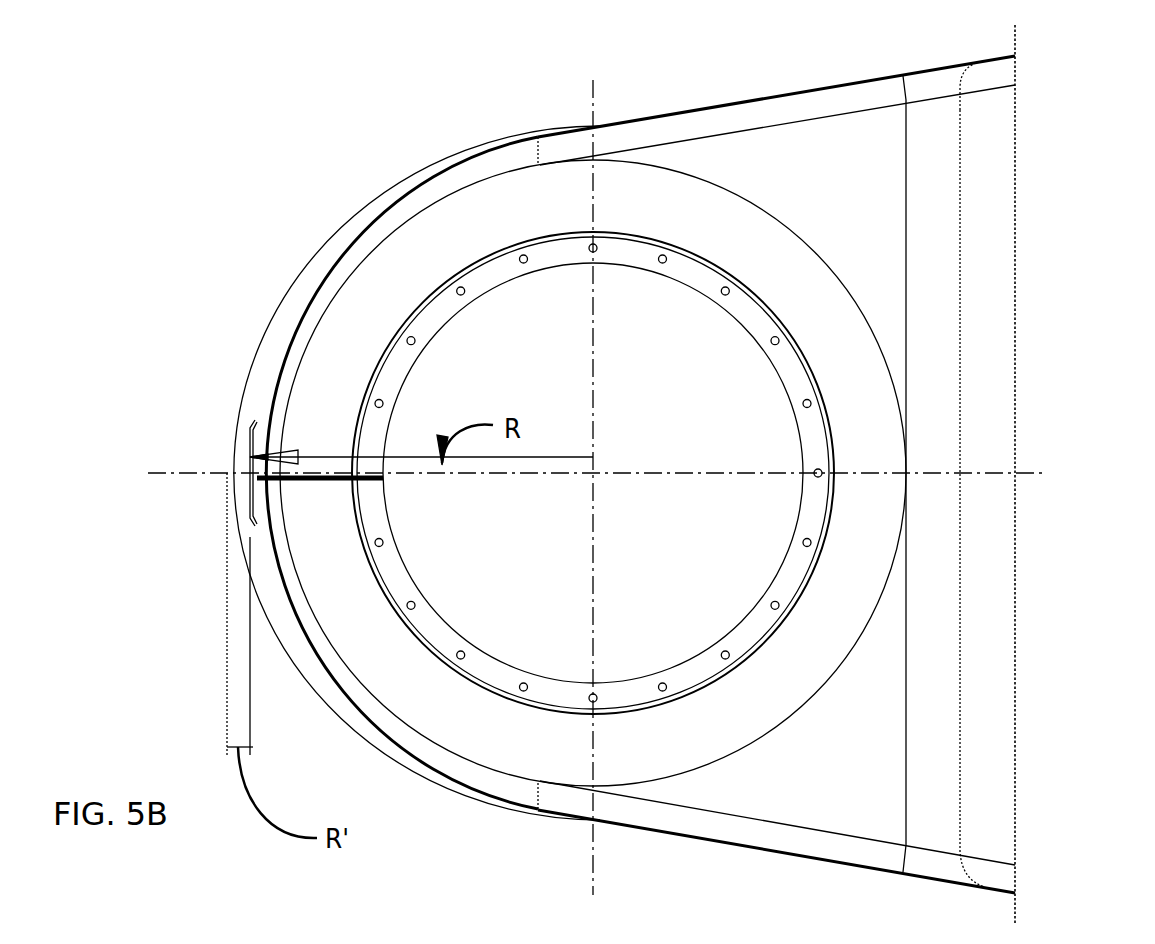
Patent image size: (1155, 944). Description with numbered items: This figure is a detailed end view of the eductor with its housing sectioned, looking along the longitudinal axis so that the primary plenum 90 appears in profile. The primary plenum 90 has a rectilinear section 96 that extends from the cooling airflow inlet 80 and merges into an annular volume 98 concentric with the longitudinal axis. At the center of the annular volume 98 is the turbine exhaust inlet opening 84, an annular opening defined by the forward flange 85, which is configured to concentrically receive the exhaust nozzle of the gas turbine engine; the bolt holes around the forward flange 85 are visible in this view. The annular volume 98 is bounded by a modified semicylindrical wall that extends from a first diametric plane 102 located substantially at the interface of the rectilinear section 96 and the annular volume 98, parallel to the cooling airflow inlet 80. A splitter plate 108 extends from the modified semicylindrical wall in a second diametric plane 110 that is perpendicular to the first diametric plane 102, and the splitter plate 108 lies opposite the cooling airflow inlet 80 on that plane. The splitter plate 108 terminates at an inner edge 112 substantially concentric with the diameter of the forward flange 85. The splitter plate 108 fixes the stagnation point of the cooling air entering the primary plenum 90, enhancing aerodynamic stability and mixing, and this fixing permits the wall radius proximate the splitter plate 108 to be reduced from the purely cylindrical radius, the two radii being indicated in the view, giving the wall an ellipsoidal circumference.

The cooling airflow inlet 80 is at (1016, 277).
The turbine exhaust inlet opening 84 is at (515, 365).
The forward flange 85 is at (738, 322).
The primary plenum 90 is at (675, 210).
The rectilinear section 96 is at (867, 178).
The annular volume 98 is at (470, 228).
The first diametric plane 102 is at (592, 880).
The splitter plate 108 is at (314, 480).
The second diametric plane 110 is at (178, 468).
The inner edge 112 is at (383, 480).